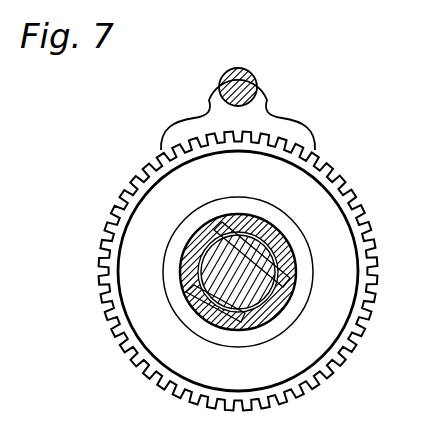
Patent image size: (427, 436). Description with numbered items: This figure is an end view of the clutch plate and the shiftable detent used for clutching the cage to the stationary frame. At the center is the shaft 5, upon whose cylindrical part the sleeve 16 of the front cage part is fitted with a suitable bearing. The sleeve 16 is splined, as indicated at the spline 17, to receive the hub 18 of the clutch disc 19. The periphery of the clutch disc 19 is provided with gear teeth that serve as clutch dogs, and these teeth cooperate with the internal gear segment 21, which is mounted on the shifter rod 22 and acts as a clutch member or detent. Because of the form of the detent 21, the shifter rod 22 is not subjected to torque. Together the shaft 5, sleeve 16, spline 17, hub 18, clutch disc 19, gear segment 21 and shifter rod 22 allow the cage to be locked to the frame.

The shaft 5 is at (218, 230).
The sleeve 16 is at (265, 220).
The spline 17 is at (198, 305).
The hub 18 is at (273, 320).
The clutch disc 19 is at (313, 198).
The internal gear segment 21 is at (270, 120).
The shifter rod 22 is at (245, 78).